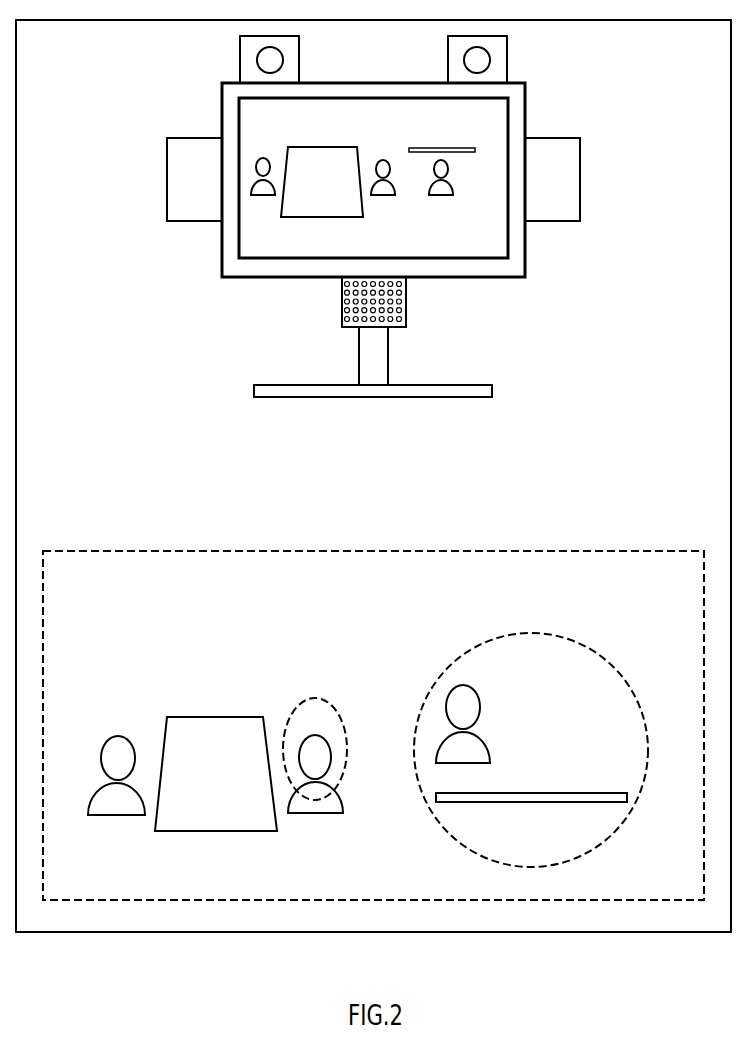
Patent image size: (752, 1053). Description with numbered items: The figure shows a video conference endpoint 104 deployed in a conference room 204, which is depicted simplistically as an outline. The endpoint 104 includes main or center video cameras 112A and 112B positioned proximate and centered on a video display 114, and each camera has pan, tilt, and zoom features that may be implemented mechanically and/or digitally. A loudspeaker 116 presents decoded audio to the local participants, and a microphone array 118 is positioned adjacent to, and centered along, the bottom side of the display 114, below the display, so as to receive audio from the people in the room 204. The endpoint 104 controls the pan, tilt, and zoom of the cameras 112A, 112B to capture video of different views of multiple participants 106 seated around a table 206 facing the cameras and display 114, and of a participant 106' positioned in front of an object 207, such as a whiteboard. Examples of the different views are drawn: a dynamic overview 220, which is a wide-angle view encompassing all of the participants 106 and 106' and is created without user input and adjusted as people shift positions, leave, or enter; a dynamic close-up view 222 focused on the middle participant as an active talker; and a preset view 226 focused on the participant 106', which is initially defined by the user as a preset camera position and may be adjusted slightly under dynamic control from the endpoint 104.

The video conference endpoint 104 is at (163, 89).
The participants 106 is at (206, 800).
The participant positioned in front of an object 106' is at (478, 717).
The main video camera 112A is at (240, 60).
The main video camera 112B is at (380, 53).
The video display 114 is at (488, 132).
The loudspeaker 116 is at (167, 178).
The microphone array 118 is at (406, 300).
The conference room 204 is at (650, 68).
The table 206 is at (215, 833).
The object 207 is at (530, 803).
The dynamic overview 220 is at (113, 551).
The dynamic close-up view 222 is at (300, 706).
The preset view 226 is at (428, 688).